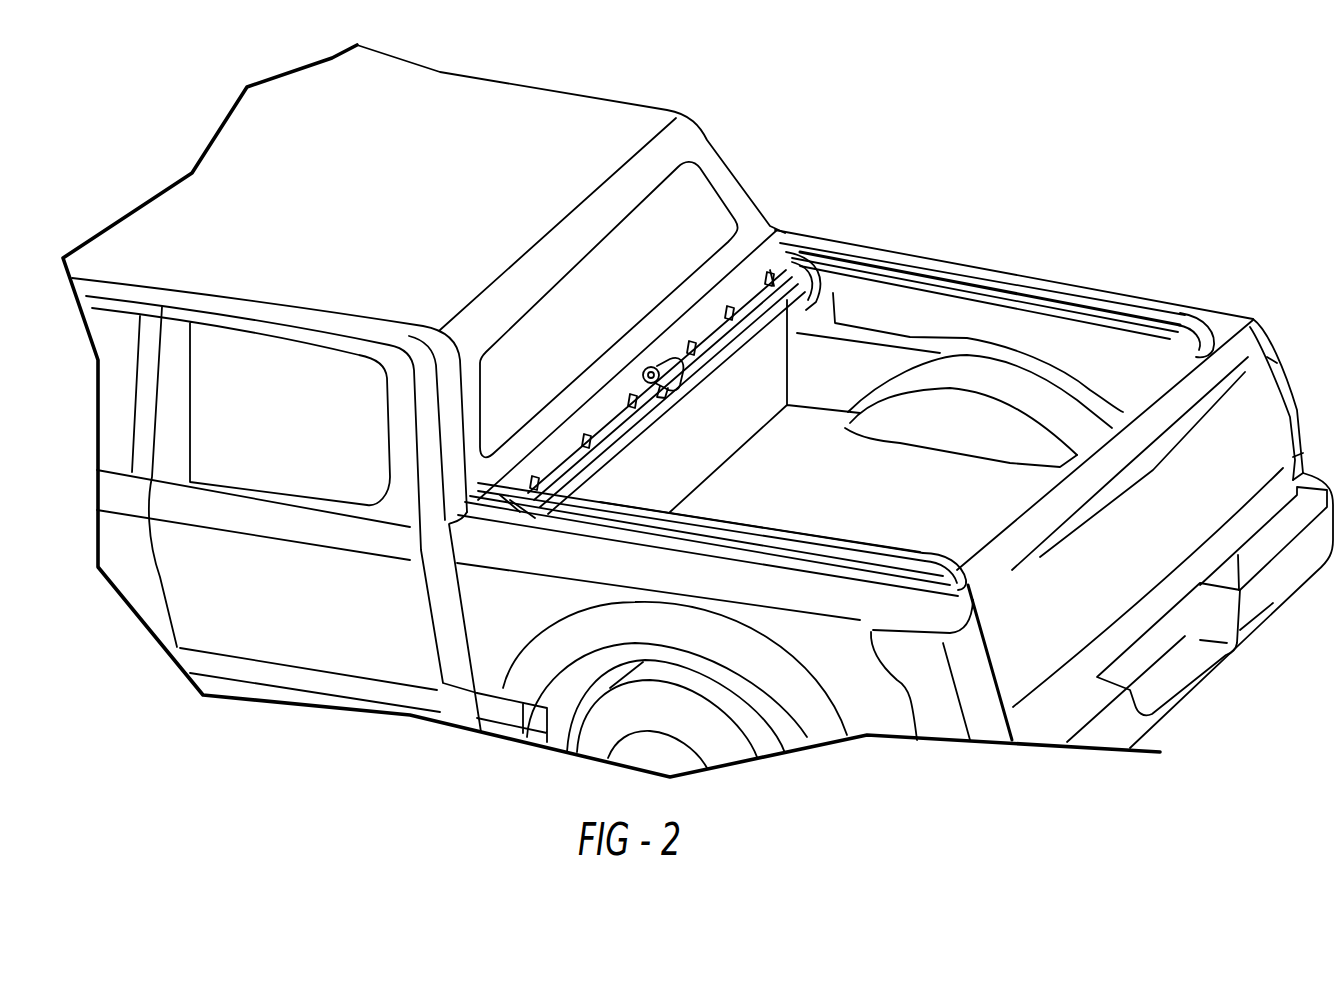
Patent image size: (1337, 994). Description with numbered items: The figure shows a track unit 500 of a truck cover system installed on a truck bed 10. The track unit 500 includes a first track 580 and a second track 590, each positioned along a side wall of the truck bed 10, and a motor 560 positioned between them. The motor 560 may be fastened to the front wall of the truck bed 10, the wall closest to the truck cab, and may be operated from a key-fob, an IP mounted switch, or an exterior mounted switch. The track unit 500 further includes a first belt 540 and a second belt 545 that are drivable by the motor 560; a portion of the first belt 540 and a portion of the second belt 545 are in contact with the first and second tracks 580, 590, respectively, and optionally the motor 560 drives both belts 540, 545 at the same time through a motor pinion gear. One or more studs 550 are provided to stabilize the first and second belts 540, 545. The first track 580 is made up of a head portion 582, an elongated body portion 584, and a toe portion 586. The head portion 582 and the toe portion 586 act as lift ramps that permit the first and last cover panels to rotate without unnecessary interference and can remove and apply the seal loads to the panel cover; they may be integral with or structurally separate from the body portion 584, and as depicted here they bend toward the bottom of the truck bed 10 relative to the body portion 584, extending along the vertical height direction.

The truck bed 10 is at (484, 640).
The track unit 500 is at (847, 224).
The first belt 540 is at (562, 456).
The second belt 545 is at (750, 308).
The studs 550 is at (597, 444).
The motor 560 is at (682, 386).
The first track 580 is at (618, 462).
The head portion 582 is at (533, 500).
The elongated body portion 584 is at (738, 524).
The toe portion 586 is at (947, 560).
The second track 590 is at (1029, 294).